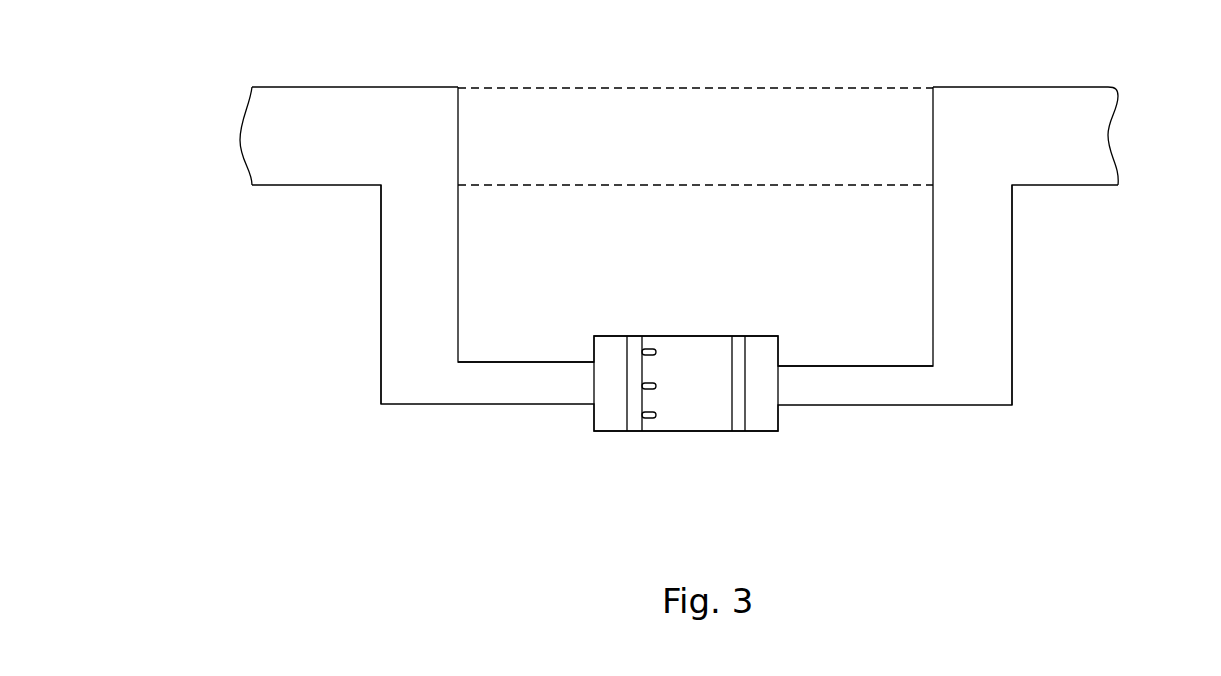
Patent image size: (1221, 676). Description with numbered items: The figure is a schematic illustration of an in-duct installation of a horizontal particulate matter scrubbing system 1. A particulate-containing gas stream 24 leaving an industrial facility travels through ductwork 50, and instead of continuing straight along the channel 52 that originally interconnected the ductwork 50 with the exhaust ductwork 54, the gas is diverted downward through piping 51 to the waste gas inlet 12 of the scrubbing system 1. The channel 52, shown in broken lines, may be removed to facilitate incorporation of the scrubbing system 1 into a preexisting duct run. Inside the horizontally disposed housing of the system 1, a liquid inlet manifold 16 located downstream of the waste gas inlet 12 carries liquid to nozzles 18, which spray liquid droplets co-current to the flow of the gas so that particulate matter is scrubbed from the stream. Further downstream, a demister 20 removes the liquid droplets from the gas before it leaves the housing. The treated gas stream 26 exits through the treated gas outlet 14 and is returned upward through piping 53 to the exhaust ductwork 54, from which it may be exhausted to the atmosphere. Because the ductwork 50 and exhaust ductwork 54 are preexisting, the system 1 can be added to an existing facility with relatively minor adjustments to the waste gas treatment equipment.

The horizontal particulate matter scrubbing system 1 is at (730, 302).
The waste gas inlet 12 is at (515, 362).
The treated gas outlet 14 is at (833, 366).
The liquid inlet manifold 16 is at (632, 423).
The nozzle 18 is at (648, 350).
The demister 20 is at (742, 428).
The particulate-containing gas stream 24 is at (233, 150).
The treated gas stream 26 is at (1205, 150).
The ductwork 50 is at (313, 87).
The piping 51 is at (381, 273).
The channel 52 is at (720, 88).
The piping 53 is at (1013, 285).
The exhaust ductwork 54 is at (1057, 87).